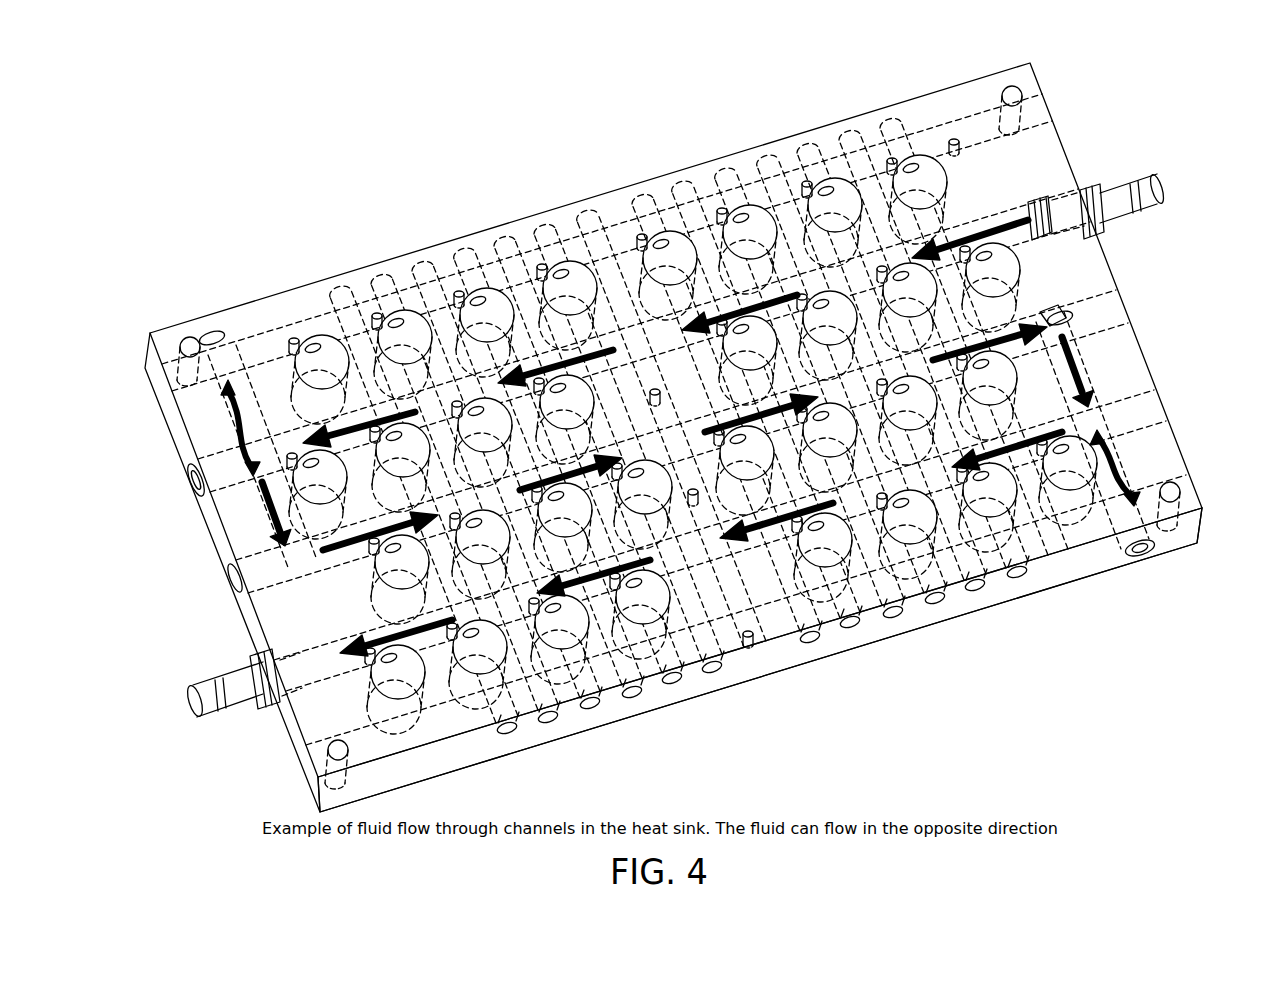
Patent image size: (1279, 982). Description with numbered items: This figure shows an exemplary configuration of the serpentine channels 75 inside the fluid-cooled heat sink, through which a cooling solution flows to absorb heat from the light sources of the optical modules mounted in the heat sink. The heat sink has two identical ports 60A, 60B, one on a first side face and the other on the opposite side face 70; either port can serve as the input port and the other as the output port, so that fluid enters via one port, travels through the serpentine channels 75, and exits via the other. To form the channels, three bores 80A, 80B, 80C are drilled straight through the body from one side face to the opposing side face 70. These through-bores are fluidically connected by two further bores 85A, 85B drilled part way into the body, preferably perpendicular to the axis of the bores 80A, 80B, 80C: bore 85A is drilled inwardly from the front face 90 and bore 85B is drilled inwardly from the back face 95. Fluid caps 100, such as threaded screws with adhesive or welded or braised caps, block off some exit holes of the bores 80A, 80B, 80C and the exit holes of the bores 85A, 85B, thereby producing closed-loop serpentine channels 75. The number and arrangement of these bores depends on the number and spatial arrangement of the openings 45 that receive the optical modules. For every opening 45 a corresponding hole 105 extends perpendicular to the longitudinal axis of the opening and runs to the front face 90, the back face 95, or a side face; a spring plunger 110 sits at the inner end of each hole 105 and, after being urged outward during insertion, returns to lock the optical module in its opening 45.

The opening 45 is at (928, 182).
The port 60A is at (1068, 190).
The port 60B is at (266, 702).
The side face 70 is at (310, 760).
The serpentine channels 75 is at (636, 333).
The bore 80A is at (985, 224).
The bore 80B is at (683, 425).
The bore 80C is at (722, 565).
The bore 85A is at (1165, 458).
The bore 85B is at (227, 430).
The front face 90 is at (1070, 572).
The back face 95 is at (261, 304).
The fluid cap 100 is at (213, 332).
The hole 105 is at (510, 732).
The spring plunger 110 is at (1150, 455).